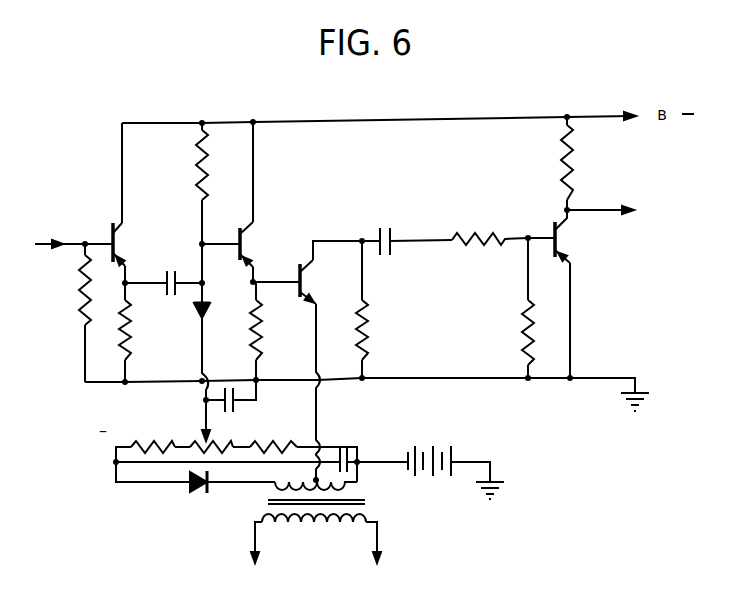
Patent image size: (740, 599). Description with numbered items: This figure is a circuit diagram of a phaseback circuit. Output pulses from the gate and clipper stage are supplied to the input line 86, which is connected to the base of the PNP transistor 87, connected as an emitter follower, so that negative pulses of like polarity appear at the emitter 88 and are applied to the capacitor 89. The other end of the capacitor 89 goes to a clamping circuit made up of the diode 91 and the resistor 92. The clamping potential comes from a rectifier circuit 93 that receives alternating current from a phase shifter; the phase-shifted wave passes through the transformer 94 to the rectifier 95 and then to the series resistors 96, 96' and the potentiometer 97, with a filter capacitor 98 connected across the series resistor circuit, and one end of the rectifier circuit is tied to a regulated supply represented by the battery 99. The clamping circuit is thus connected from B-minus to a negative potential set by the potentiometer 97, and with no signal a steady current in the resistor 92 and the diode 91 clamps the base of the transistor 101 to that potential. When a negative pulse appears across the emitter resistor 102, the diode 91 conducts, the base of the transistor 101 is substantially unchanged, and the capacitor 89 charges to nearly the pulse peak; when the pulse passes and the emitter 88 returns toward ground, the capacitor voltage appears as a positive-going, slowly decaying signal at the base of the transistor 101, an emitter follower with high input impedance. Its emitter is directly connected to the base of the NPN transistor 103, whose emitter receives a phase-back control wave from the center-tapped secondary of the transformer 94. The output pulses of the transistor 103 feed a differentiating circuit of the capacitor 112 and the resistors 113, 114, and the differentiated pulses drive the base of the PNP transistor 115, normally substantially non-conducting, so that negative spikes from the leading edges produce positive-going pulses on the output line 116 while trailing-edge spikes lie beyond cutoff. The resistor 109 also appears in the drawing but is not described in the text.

The input line 86 is at (50, 238).
The transistor 87 is at (88, 222).
The emitter 88 is at (127, 267).
The capacitor 89 is at (172, 269).
The diode 91 is at (210, 303).
The resistor 92 is at (208, 167).
The rectifier circuit 93 is at (88, 514).
The transformer 94 is at (233, 506).
The rectifier 95 is at (193, 493).
The series resistor 96 is at (153, 431).
The series resistor 96' is at (273, 430).
The potentiometer 97 is at (222, 443).
The filter capacitor 98 is at (347, 472).
The battery 99 is at (428, 452).
The transistor 101 is at (246, 221).
The emitter resistor 102 is at (131, 328).
The transistor 103 is at (277, 259).
The resistor 109 is at (368, 329).
The capacitor 112 is at (387, 227).
The resistor 113 is at (482, 231).
The resistor 114 is at (520, 330).
The transistor 115 is at (524, 216).
The output line 116 is at (594, 211).